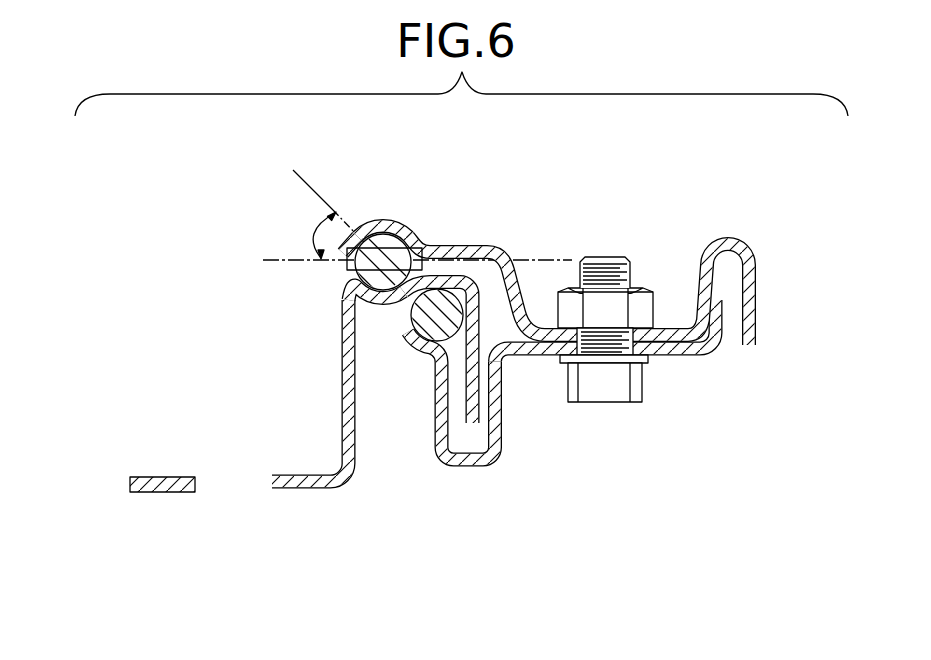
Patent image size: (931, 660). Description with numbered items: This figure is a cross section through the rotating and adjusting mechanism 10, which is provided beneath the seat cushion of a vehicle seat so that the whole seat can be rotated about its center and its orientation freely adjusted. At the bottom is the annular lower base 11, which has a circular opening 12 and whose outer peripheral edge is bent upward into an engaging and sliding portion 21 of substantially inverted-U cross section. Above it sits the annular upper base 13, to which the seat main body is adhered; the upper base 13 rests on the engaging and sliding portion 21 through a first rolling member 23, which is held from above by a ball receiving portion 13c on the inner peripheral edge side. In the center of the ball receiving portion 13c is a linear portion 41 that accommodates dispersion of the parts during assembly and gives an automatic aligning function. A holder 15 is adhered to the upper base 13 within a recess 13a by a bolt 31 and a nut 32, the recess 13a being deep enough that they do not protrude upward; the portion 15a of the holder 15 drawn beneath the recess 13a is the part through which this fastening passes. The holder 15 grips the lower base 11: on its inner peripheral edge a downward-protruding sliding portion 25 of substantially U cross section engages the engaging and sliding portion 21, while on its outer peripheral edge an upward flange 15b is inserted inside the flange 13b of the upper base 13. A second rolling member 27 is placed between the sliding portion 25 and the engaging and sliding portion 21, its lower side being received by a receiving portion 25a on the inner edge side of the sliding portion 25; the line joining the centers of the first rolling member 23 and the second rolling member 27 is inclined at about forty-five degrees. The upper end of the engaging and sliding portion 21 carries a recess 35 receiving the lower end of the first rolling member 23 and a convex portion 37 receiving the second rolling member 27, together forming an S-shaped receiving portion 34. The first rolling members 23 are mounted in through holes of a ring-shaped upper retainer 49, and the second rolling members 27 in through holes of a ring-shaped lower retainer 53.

The rotating and adjusting mechanism 10 is at (206, 214).
The lower base 11 is at (302, 499).
The circular opening 12 is at (131, 495).
The upper base 13 is at (489, 246).
The recess 13a is at (549, 327).
The flange 13b is at (757, 280).
The ball receiving portion 13c is at (385, 218).
The holder 15 is at (534, 359).
The flat portion of second bracket 15a is at (680, 362).
The flange 15b is at (717, 351).
The engaging and sliding portion 21 is at (340, 416).
The first rolling member 23 is at (356, 272).
The sliding portion 25 is at (475, 471).
The receiving portion 25a is at (403, 340).
The second rolling member 27 is at (464, 275).
The bolt 31 is at (603, 403).
The nut 32 is at (641, 290).
The S-shaped receiving portion 34 is at (355, 292).
The recess 35 is at (370, 303).
The convex portion 37 is at (504, 263).
The linear portion 41 is at (347, 236).
The upper retainer 49 is at (313, 234).
The lower retainer 53 is at (437, 288).